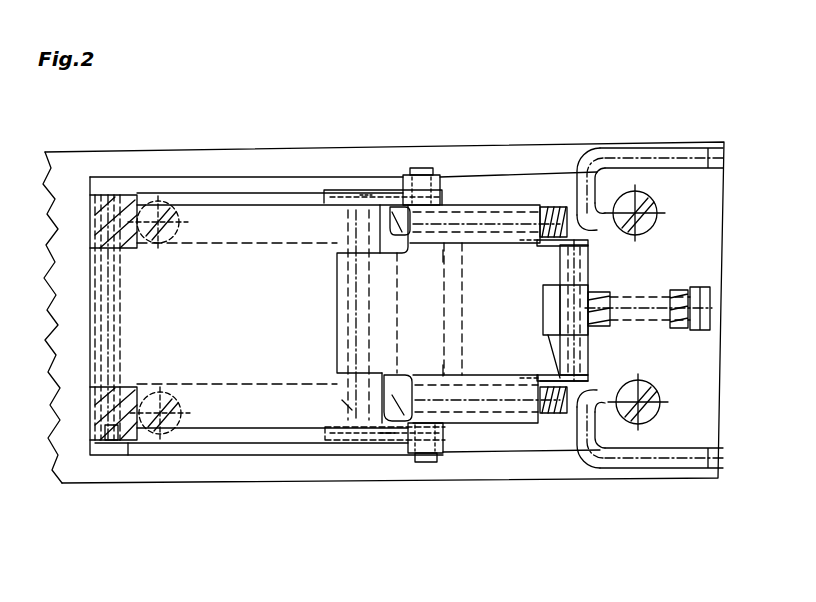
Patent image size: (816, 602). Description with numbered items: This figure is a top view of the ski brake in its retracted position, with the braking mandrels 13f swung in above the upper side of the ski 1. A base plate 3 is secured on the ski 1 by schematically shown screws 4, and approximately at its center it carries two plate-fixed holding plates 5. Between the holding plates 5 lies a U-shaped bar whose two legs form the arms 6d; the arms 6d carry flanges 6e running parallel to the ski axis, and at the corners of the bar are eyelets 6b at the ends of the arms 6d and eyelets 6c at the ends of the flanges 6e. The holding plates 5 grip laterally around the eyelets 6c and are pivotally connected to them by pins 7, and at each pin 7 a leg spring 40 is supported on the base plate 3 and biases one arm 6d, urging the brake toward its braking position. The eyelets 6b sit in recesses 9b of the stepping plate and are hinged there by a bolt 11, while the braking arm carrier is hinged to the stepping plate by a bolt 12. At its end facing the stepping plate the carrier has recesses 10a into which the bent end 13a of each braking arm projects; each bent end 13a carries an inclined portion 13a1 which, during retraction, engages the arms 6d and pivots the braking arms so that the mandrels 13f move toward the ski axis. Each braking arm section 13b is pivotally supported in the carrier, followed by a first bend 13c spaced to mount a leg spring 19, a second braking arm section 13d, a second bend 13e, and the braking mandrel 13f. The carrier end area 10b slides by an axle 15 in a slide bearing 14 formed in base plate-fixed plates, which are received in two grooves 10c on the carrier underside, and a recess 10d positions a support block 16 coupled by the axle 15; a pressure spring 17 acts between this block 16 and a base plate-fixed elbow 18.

The ski 1 is at (78, 180).
The base plate 3 is at (152, 188).
The screws 4 is at (178, 205).
The holding plates 5 is at (428, 190).
The eyelets 6b is at (110, 200).
The eyelets 6c is at (445, 238).
The arms 6d is at (275, 235).
The flanges 6e is at (230, 205).
The pins 7 is at (420, 170).
The recesses 9b is at (130, 443).
The recesses 10a is at (395, 215).
The end area 10b is at (588, 243).
The grooves 10c is at (495, 222).
The recess 10d is at (560, 430).
The bolt 11 is at (110, 425).
The bolt 12 is at (352, 405).
The bent end 13a is at (400, 200).
The inclined portion 13a1 is at (368, 530).
The braking arm section 13b is at (530, 220).
The first bend 13c is at (590, 403).
The second braking arm section 13d is at (585, 183).
The second bend 13e is at (590, 455).
The braking mandrel 13f is at (660, 143).
The slide bearing 14 is at (548, 382).
The axle 15 is at (575, 265).
The support block 16 is at (590, 295).
The pressure spring 17 is at (705, 295).
The elbow 18 is at (693, 317).
The leg spring 19 is at (548, 215).
The leg spring 40 is at (423, 465).